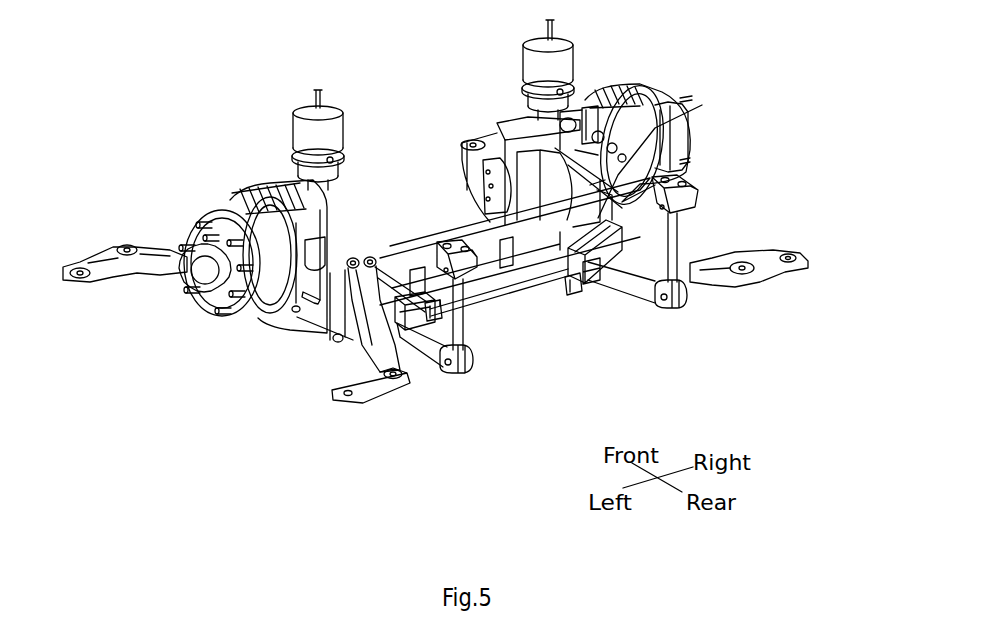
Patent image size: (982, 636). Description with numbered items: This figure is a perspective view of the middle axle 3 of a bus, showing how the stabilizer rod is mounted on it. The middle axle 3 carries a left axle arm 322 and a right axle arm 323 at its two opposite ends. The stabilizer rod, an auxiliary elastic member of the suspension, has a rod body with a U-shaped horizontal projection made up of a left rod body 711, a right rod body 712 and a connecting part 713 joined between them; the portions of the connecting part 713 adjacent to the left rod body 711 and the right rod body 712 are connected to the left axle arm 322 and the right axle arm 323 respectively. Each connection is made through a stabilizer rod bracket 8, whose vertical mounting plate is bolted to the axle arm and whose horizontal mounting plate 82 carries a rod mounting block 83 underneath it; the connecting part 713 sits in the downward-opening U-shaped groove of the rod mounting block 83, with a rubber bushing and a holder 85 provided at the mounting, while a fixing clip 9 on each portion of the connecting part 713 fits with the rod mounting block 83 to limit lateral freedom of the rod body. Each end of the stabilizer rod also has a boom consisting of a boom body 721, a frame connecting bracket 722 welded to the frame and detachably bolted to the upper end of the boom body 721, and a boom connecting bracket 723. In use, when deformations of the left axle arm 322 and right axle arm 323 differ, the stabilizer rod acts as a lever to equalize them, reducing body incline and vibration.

The middle axle 3 is at (481, 222).
The stabilizer rod bracket 8 is at (405, 310).
The fixing clip 9 is at (437, 309).
The horizontal mounting plate 82 is at (670, 111).
The rod mounting block 83 is at (591, 281).
The holder 85 is at (583, 285).
The left axle arm 322 is at (368, 330).
The right axle arm 323 is at (650, 248).
The left rod body 711 is at (430, 353).
The right rod body 712 is at (652, 284).
The connecting part 713 is at (515, 285).
The boom body 721 is at (466, 352).
The frame connecting bracket 722 is at (447, 253).
The boom connecting bracket 723 is at (450, 368).